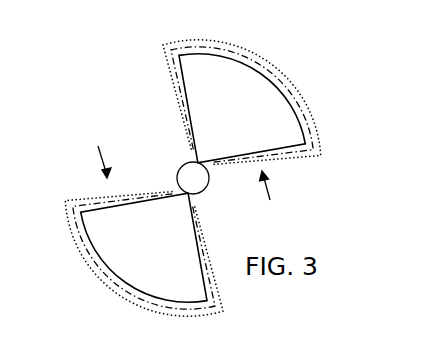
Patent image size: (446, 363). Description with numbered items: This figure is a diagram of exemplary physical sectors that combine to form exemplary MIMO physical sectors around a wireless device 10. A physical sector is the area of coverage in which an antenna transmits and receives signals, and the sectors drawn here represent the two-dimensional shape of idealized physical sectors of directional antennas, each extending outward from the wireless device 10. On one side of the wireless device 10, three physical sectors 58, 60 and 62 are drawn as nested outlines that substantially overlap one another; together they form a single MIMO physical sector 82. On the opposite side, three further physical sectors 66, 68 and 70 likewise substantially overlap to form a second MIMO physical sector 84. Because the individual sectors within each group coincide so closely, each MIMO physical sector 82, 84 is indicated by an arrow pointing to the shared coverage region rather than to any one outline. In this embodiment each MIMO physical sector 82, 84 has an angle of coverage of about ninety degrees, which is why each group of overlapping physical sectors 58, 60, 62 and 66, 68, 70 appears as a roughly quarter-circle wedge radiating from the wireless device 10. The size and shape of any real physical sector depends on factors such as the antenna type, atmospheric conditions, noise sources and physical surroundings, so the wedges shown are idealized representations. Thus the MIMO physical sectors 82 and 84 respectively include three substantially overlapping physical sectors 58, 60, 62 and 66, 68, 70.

The wireless device 10 is at (186, 186).
The physical sector 58 is at (108, 265).
The physical sector 60 is at (80, 232).
The physical sector 62 is at (66, 199).
The physical sector 66 is at (262, 79).
The physical sector 68 is at (232, 58).
The physical sector 70 is at (195, 43).
The MIMO physical sector 82 is at (97, 149).
The MIMO physical sector 84 is at (270, 202).